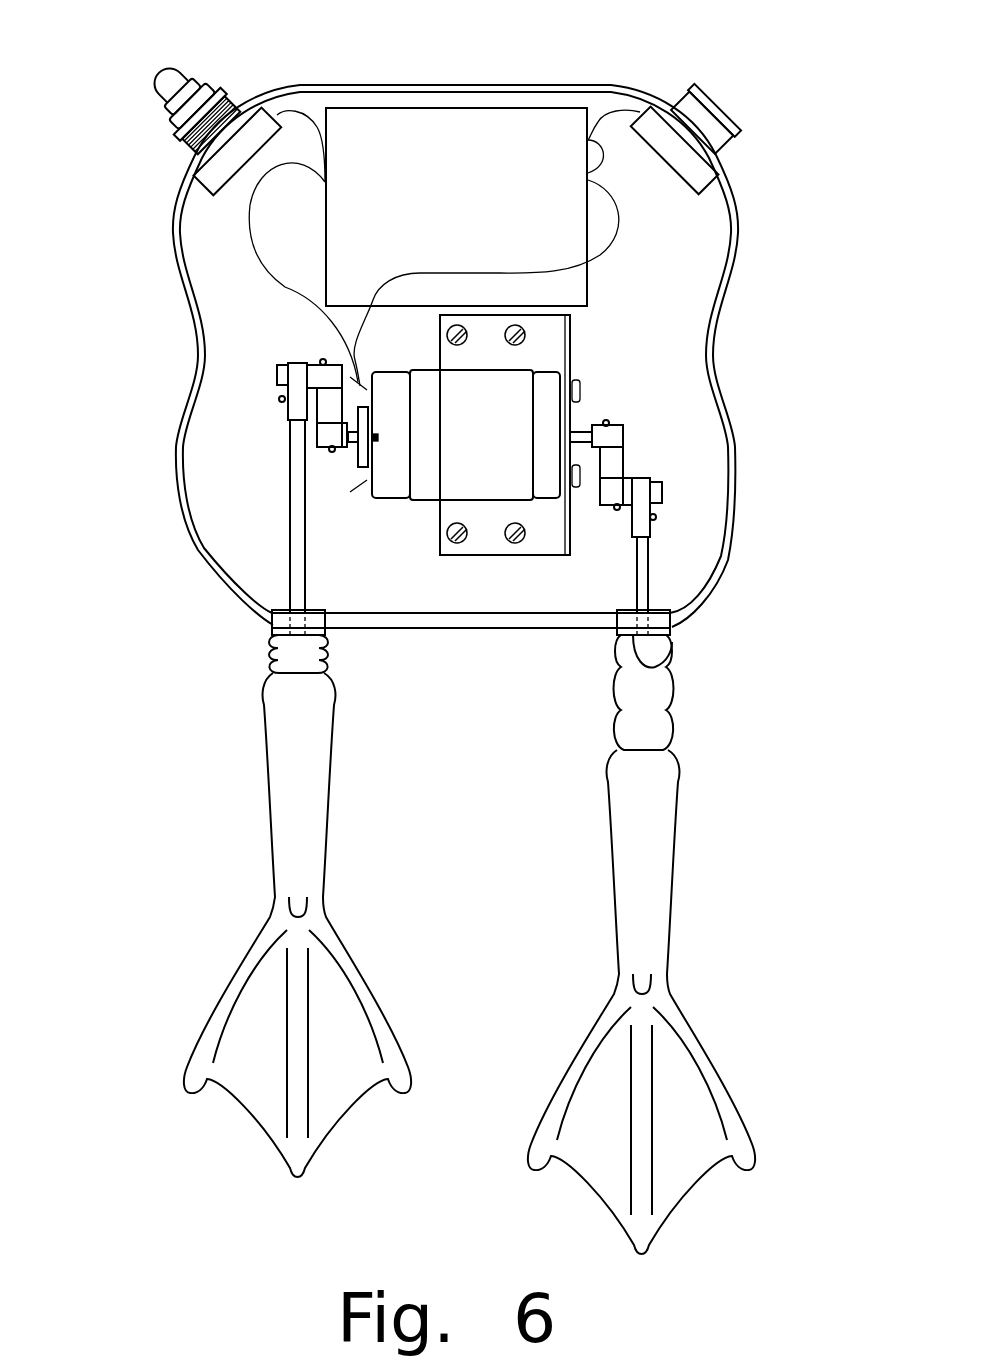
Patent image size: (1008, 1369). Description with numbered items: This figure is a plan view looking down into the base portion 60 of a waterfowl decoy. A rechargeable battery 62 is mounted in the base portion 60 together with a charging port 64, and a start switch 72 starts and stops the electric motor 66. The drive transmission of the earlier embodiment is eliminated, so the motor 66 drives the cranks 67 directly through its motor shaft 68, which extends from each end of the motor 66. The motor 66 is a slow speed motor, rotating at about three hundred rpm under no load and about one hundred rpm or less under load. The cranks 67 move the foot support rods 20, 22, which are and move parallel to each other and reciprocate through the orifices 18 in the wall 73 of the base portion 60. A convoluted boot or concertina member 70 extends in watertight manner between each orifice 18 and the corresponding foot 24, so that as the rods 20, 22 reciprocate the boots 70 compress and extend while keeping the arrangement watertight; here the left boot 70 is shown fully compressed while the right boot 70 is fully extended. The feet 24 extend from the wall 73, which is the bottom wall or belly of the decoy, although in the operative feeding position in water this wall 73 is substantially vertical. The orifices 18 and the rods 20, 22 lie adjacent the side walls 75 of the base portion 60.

The orifice 18 is at (665, 672).
The foot support rod 20 is at (290, 487).
The foot support rod 22 is at (640, 563).
The foot 24 is at (577, 905).
The base portion 60 is at (763, 352).
The battery 62 is at (433, 130).
The charging port 64 is at (730, 110).
The electric motor 66 is at (447, 480).
The crank 67 is at (278, 380).
The motor shaft 68 is at (576, 432).
The convoluted boot 70 is at (330, 658).
The start switch 72 is at (155, 74).
The wall 73 is at (488, 630).
The side wall 75 is at (185, 432).